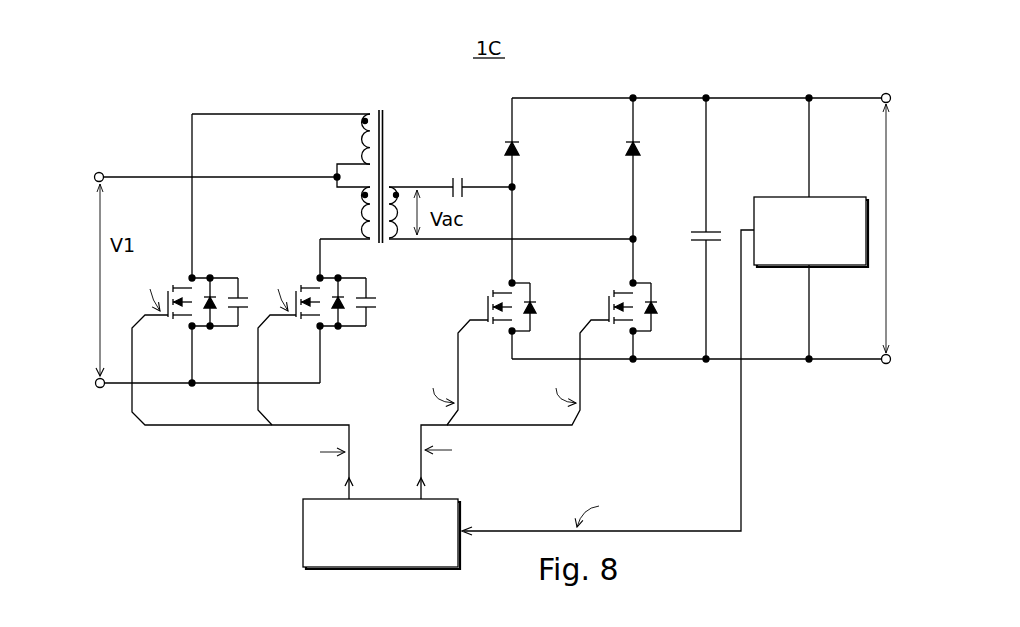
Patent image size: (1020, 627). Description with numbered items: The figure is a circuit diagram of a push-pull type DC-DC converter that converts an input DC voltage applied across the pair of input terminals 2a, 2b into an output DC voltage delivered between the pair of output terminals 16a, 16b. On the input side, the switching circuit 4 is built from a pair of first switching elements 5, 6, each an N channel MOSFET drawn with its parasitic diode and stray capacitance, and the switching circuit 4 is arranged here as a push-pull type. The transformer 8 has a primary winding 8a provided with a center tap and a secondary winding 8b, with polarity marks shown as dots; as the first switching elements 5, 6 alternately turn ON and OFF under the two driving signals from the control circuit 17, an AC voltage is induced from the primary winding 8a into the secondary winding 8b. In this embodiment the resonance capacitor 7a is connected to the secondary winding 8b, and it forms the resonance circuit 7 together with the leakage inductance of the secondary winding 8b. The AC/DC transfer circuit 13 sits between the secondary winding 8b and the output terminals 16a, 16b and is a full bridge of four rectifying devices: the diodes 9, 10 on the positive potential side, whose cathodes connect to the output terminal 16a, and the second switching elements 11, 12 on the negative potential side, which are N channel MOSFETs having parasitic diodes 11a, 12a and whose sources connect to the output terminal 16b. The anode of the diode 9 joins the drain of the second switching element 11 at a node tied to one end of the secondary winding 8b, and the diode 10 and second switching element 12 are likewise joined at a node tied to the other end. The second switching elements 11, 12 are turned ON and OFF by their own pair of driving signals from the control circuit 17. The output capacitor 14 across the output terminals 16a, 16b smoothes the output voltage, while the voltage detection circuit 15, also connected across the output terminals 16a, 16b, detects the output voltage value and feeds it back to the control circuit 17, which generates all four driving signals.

The input terminal 2a is at (100, 171).
The input terminal 2b is at (104, 389).
The switching circuit 4 is at (254, 284).
The first switching element 5 is at (186, 286).
The first switching element 6 is at (313, 286).
The resonance circuit 7 is at (480, 143).
The resonance capacitor 7a is at (455, 178).
The transformer 8 is at (476, 152).
The primary winding 8a is at (369, 114).
The secondary winding 8b is at (392, 186).
The diode 9 is at (520, 150).
The diode 10 is at (642, 150).
The second switching element 11 is at (488, 305).
The parasitic diode 11a is at (536, 304).
The second switching element 12 is at (609, 305).
The parasitic diode 12a is at (657, 304).
The AC/DC transfer circuit 13 is at (667, 265).
The output capacitor 14 is at (713, 230).
The voltage detection circuit 15 is at (830, 196).
The output terminal 16a is at (885, 92).
The output terminal 16b is at (885, 366).
The control circuit 17 is at (440, 497).